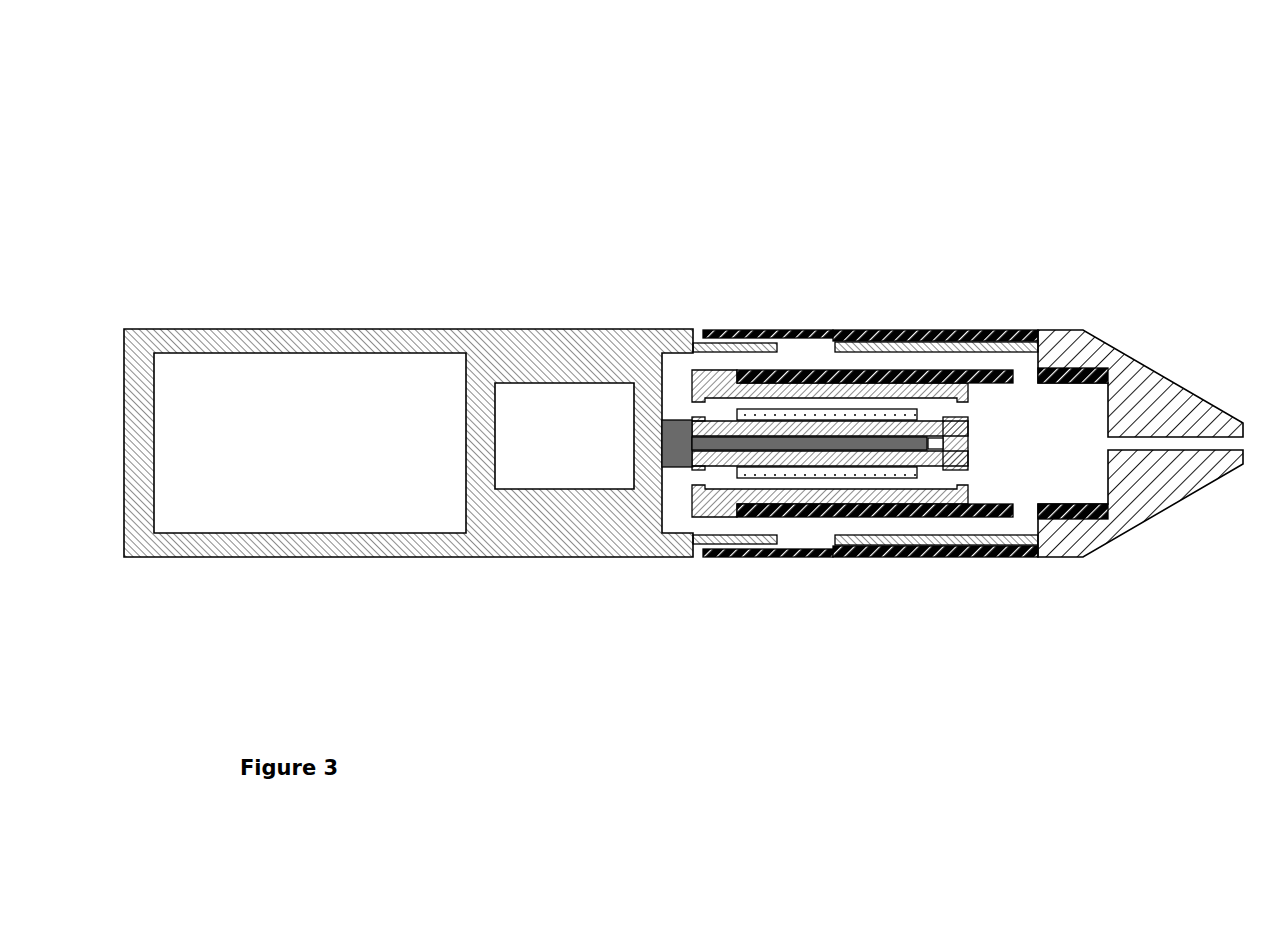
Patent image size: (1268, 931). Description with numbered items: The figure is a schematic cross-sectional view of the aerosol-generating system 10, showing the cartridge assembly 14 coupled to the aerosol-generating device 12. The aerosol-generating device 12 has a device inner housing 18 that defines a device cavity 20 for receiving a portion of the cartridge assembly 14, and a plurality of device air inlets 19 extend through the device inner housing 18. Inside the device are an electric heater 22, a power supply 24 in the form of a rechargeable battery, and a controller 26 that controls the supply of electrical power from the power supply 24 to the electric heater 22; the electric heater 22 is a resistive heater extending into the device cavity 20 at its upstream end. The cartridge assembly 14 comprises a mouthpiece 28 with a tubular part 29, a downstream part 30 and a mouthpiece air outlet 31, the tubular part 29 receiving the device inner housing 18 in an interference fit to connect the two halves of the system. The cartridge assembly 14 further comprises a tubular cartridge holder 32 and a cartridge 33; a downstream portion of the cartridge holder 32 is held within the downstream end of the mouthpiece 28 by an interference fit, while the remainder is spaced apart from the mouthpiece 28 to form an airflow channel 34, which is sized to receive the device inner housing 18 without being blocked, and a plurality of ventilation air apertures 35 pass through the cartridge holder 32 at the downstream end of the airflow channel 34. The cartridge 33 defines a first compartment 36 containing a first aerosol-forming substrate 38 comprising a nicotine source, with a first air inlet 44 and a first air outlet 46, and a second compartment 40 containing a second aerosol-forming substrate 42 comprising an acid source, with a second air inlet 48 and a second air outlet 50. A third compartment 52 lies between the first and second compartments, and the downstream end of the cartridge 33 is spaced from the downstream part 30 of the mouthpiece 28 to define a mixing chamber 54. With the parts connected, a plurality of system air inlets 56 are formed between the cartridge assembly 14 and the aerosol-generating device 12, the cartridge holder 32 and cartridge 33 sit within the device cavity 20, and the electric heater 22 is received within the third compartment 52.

The aerosol-generating system 10 is at (398, 248).
The aerosol-generating device 12 is at (305, 328).
The cartridge assembly 14 is at (978, 328).
The device inner housing 18 is at (742, 348).
The device air inlets 19 is at (797, 348).
The device cavity 20 is at (678, 518).
The electric heater 22 is at (731, 440).
The power supply 24 is at (300, 449).
The controller 26 is at (547, 443).
The mouthpiece 28 is at (1126, 378).
The tubular part 29 is at (889, 347).
The downstream part 30 is at (1175, 397).
The mouthpiece air outlet 31 is at (1192, 442).
The cartridge holder 32 is at (923, 507).
The cartridge 33 is at (690, 368).
The airflow channel 34 is at (963, 527).
The ventilation air apertures 35 is at (1023, 510).
The first compartment 36 is at (877, 402).
The first aerosol-forming substrate 38 is at (835, 415).
The second compartment 40 is at (818, 483).
The second aerosol-forming substrate 42 is at (783, 468).
The first air inlet 44 is at (695, 408).
The first air outlet 46 is at (963, 410).
The second air inlet 48 is at (695, 472).
The second air outlet 50 is at (963, 478).
The third compartment 52 is at (935, 449).
The mixing chamber 54 is at (1083, 475).
The system air inlets 56 is at (697, 335).